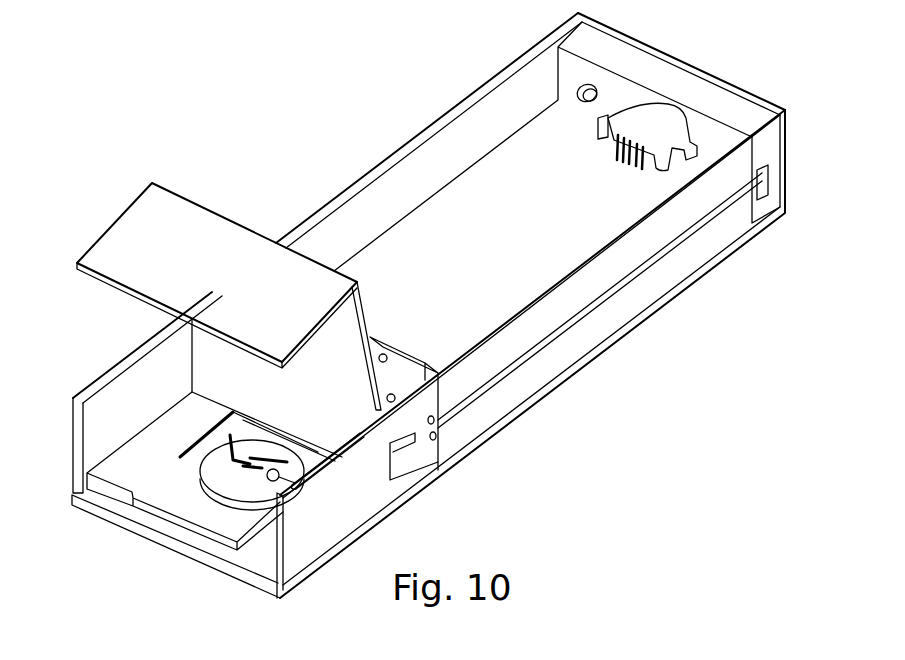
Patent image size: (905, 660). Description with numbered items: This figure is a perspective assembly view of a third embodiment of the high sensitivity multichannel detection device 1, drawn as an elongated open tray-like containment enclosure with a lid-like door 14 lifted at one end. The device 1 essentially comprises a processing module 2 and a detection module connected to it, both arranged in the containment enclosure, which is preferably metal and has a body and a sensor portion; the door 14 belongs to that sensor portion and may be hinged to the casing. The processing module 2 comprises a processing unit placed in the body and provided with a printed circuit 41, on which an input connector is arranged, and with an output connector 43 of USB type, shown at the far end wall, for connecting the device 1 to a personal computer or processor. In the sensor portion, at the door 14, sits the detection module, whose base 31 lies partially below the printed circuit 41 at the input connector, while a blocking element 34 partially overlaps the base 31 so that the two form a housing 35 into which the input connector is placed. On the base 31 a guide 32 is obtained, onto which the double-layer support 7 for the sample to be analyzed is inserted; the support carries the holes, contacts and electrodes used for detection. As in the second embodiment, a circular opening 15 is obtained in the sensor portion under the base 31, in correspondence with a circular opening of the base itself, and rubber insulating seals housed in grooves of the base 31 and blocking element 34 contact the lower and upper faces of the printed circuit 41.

The high sensitivity multichannel detection device 1 is at (334, 118).
The processing module 2 is at (762, 252).
The double-layer support 7 is at (188, 472).
The door 14 is at (157, 210).
The circular opening 15 is at (387, 396).
The base 31 is at (78, 505).
The guide 32 is at (215, 522).
The blocking element 34 is at (208, 353).
The housing 35 is at (412, 458).
The printed circuit 41 is at (625, 263).
The output connector 43 is at (647, 122).